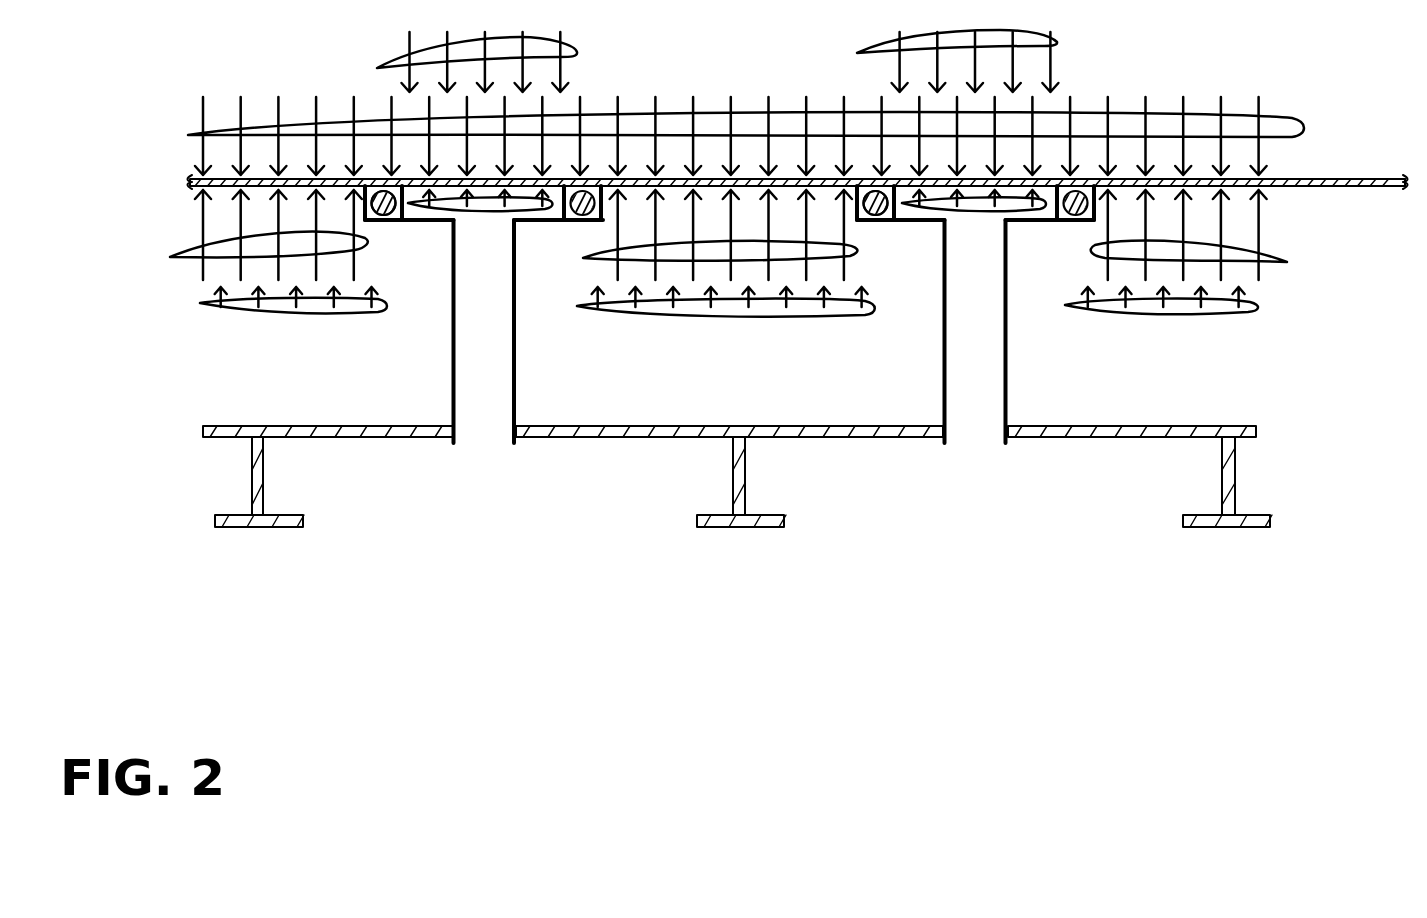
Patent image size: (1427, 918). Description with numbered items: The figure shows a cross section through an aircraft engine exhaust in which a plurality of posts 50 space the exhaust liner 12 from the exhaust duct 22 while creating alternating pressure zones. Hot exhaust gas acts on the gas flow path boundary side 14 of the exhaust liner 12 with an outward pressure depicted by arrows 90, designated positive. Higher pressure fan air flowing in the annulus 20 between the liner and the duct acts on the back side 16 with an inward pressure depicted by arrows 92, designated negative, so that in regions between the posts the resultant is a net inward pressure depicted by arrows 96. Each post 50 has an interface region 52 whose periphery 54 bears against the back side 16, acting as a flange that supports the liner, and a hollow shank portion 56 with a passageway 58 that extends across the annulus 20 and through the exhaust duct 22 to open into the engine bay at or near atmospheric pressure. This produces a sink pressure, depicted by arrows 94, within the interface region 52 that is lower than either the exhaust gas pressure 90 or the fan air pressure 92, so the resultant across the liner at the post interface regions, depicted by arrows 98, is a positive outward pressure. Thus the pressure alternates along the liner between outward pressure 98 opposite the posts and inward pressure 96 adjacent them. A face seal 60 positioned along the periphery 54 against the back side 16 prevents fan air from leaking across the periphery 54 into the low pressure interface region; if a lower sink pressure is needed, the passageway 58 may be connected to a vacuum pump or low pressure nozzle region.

The exhaust liner 12 is at (1375, 180).
The gas flow path boundary side 14 is at (1330, 178).
The back side 16 is at (1310, 187).
The annulus 20 is at (362, 420).
The exhaust duct 22 is at (908, 437).
The post 50 is at (450, 424).
The interface region 52 is at (427, 223).
The periphery 54 is at (371, 186).
The shank portion 56 is at (516, 322).
The passageway 58 is at (475, 377).
The face seal 60 is at (381, 219).
The arrows depicting hot exhaust gas pressure 90 is at (188, 135).
The arrows depicting fan air pressure 92 is at (170, 257).
The arrows depicting sink pressure 94 is at (520, 210).
The arrows depicting resultant net inward pressure 96 is at (232, 313).
The arrows depicting resultant net outward pressure 98 is at (377, 68).